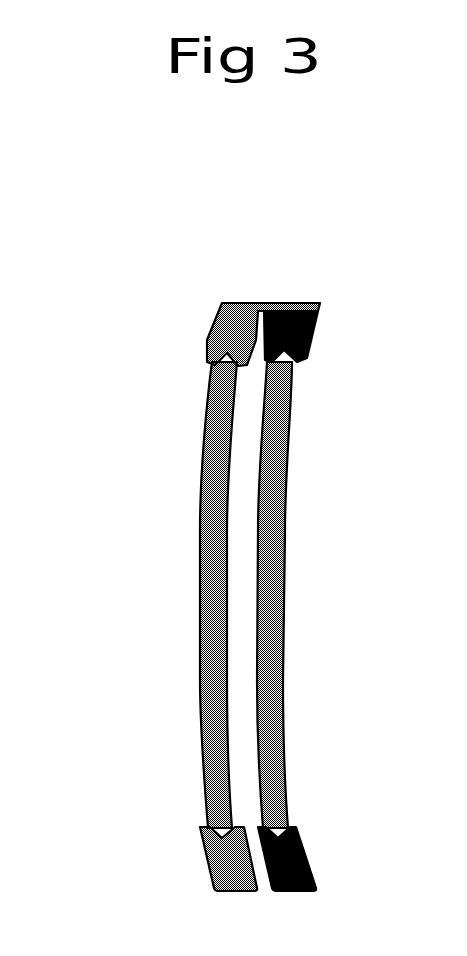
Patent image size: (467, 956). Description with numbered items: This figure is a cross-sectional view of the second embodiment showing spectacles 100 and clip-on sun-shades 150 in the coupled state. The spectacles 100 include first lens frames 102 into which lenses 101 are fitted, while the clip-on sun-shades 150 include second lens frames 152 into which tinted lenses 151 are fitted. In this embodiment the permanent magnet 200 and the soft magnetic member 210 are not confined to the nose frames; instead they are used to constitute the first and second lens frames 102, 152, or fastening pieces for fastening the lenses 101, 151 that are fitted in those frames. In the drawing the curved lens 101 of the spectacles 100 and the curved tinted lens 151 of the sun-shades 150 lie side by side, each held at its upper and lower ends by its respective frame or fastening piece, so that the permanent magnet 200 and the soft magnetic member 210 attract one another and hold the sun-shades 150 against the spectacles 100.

The spectacles 100 is at (311, 623).
The lenses 101 is at (278, 498).
The first lens frames 102 is at (300, 858).
The clip-on sun-shades 150 is at (171, 631).
The tinted lenses 151 is at (208, 503).
The second lens frames 152 is at (213, 864).
The permanent magnet 200 is at (313, 322).
The soft magnetic member 210 is at (272, 303).